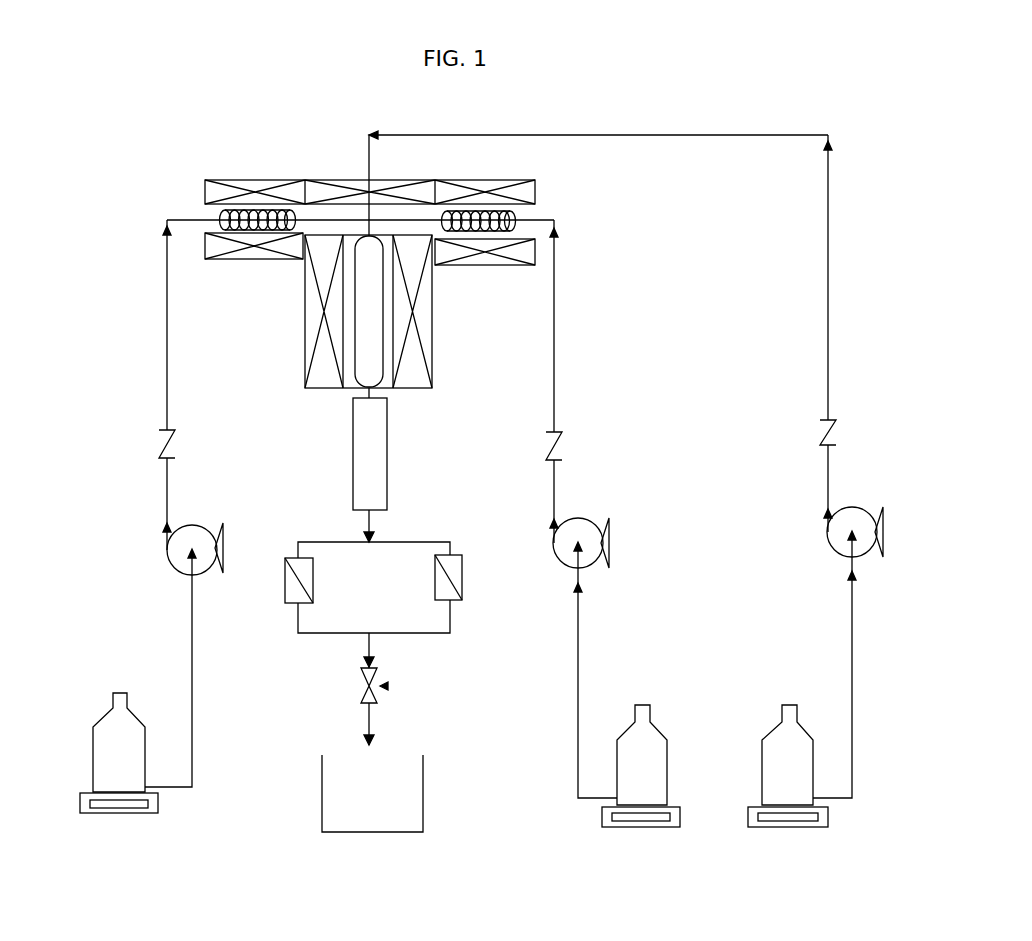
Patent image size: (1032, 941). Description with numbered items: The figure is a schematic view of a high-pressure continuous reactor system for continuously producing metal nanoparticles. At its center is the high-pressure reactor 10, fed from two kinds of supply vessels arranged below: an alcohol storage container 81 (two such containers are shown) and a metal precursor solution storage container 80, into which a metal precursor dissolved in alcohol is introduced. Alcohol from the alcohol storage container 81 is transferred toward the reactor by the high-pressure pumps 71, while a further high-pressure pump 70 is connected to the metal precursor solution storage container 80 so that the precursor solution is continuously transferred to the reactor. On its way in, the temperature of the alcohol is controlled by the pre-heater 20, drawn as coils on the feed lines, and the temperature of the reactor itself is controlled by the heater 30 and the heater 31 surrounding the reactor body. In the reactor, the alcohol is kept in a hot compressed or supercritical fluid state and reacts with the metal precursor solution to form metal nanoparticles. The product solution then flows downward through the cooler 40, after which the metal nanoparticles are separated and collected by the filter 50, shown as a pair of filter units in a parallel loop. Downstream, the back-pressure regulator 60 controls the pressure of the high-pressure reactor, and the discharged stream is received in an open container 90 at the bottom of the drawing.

The high-pressure reactor 10 is at (385, 322).
The pre-heater 20 is at (214, 214).
The heater 30 is at (303, 313).
The heater 31 is at (287, 174).
The cooler 40 is at (388, 450).
The filter 50 is at (316, 578).
The back-pressure regulator 60 is at (388, 686).
The high-pressure pump 70 is at (826, 545).
The high-pressure pump 71 is at (160, 554).
The metal precursor solution storage container 80 is at (762, 741).
The alcohol storage container 81 is at (92, 745).
The collection container 90 is at (316, 792).